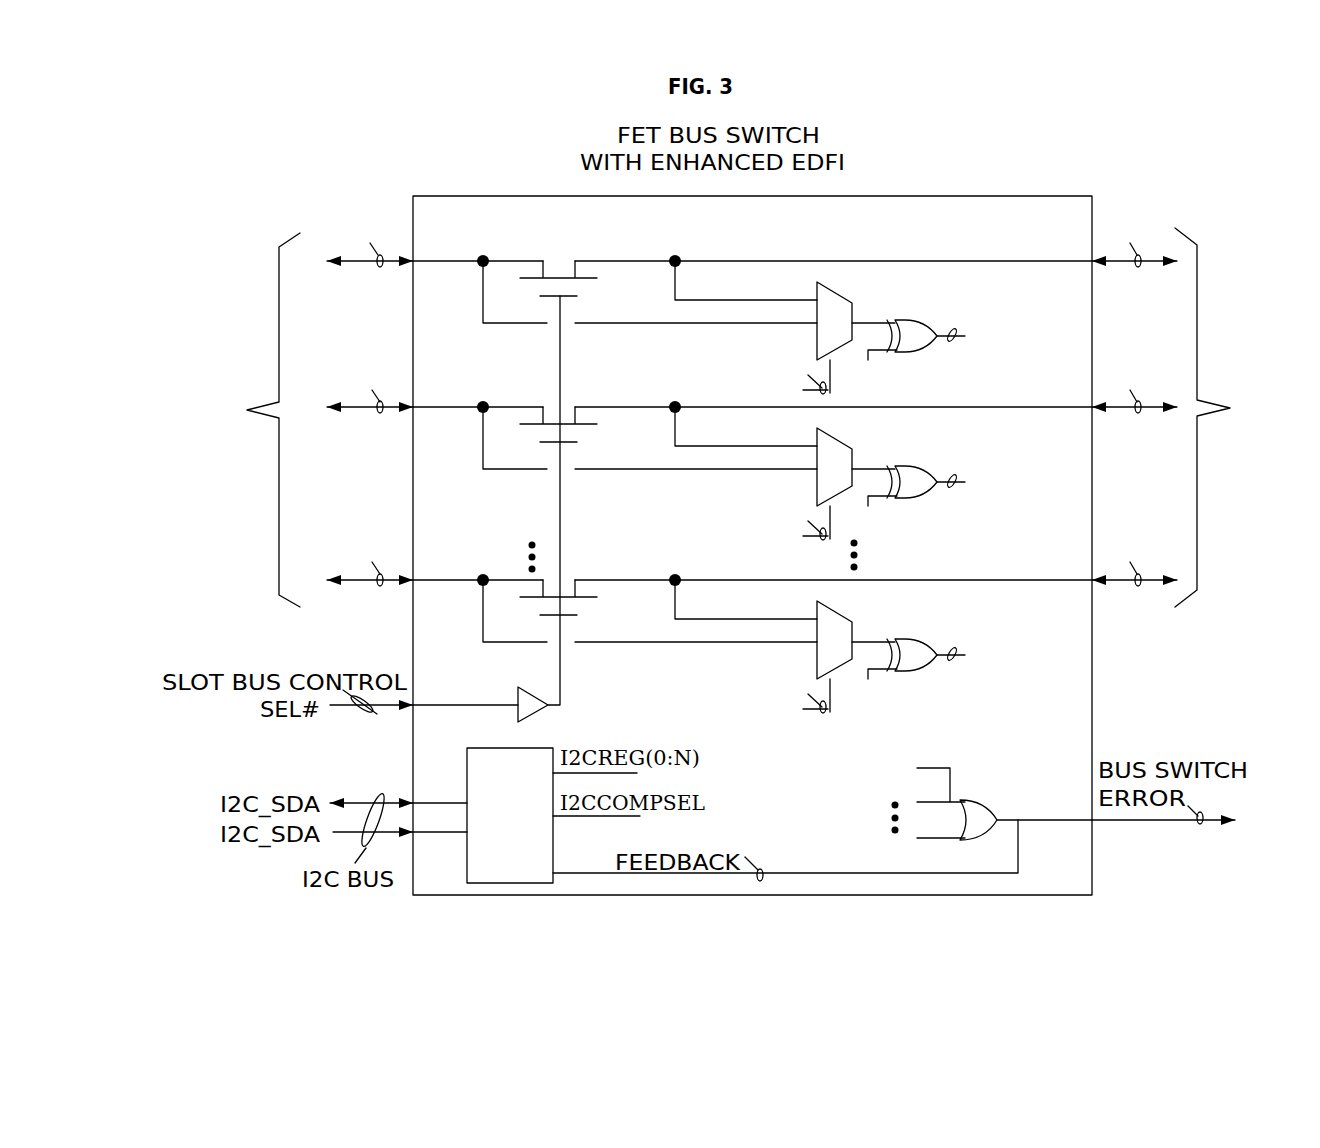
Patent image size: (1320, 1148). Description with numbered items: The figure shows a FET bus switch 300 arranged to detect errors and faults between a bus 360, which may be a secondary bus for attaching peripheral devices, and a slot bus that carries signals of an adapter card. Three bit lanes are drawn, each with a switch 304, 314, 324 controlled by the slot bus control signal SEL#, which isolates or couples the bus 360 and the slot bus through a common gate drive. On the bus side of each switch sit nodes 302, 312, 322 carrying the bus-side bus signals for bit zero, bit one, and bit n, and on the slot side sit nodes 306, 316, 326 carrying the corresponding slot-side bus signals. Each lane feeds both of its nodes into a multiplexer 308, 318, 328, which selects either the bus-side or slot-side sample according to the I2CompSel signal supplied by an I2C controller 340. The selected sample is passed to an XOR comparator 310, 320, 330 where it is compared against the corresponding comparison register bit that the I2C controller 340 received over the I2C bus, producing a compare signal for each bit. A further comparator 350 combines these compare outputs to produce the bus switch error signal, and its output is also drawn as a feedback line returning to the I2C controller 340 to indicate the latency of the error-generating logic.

The bus switch 300 is at (1005, 196).
The node 302 is at (480, 257).
The switch 304 is at (561, 264).
The node 306 is at (677, 258).
The multiplexer 308 is at (845, 293).
The comparator 310 is at (903, 318).
The node 312 is at (480, 403).
The switch 314 is at (561, 410).
The node 316 is at (678, 410).
The multiplexer 318 is at (845, 439).
The comparator 320 is at (904, 464).
The node 322 is at (480, 576).
The switch 324 is at (562, 584).
The node 326 is at (678, 576).
The multiplexer 328 is at (845, 612).
The comparator 330 is at (904, 637).
The I2C controller 340 is at (510, 862).
The comparator 350 is at (958, 810).
The bus 360 is at (730, 412).